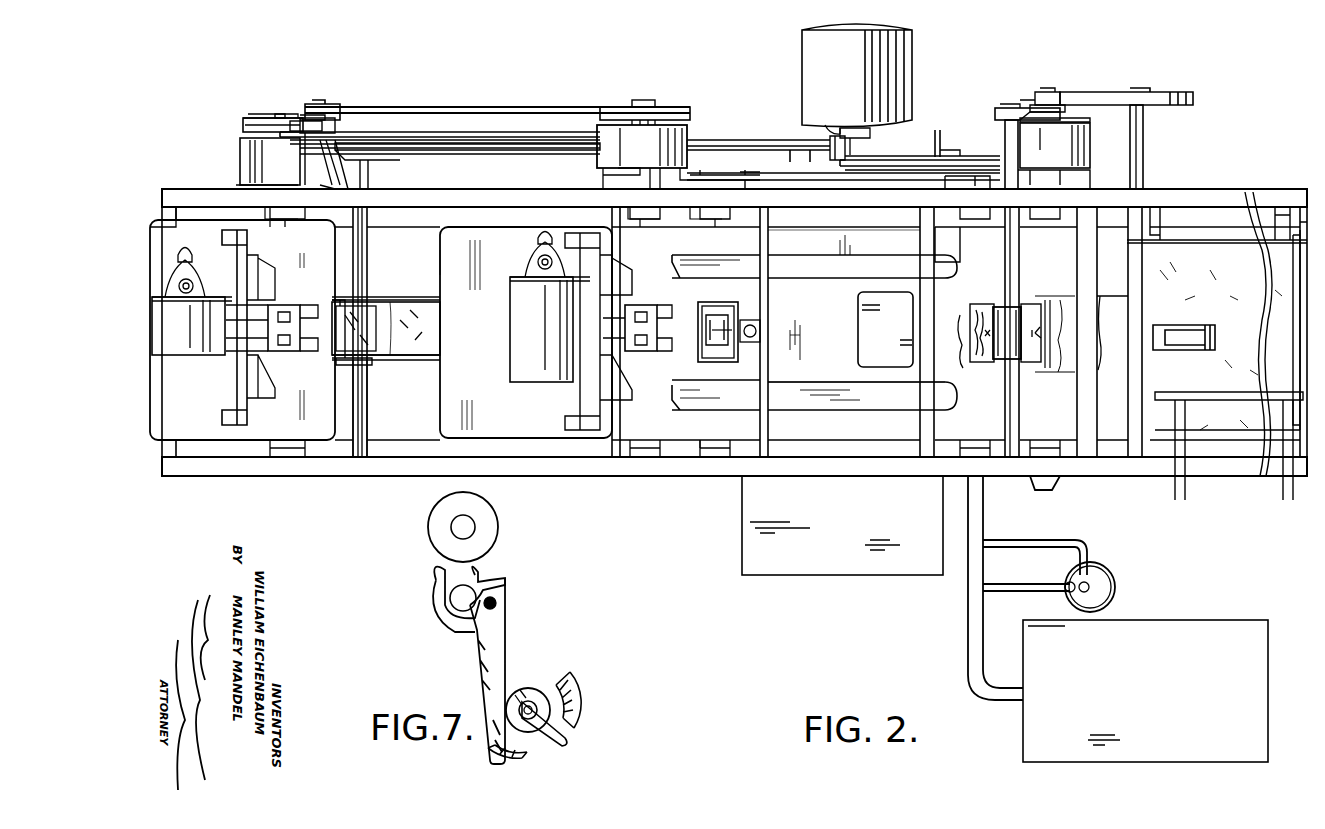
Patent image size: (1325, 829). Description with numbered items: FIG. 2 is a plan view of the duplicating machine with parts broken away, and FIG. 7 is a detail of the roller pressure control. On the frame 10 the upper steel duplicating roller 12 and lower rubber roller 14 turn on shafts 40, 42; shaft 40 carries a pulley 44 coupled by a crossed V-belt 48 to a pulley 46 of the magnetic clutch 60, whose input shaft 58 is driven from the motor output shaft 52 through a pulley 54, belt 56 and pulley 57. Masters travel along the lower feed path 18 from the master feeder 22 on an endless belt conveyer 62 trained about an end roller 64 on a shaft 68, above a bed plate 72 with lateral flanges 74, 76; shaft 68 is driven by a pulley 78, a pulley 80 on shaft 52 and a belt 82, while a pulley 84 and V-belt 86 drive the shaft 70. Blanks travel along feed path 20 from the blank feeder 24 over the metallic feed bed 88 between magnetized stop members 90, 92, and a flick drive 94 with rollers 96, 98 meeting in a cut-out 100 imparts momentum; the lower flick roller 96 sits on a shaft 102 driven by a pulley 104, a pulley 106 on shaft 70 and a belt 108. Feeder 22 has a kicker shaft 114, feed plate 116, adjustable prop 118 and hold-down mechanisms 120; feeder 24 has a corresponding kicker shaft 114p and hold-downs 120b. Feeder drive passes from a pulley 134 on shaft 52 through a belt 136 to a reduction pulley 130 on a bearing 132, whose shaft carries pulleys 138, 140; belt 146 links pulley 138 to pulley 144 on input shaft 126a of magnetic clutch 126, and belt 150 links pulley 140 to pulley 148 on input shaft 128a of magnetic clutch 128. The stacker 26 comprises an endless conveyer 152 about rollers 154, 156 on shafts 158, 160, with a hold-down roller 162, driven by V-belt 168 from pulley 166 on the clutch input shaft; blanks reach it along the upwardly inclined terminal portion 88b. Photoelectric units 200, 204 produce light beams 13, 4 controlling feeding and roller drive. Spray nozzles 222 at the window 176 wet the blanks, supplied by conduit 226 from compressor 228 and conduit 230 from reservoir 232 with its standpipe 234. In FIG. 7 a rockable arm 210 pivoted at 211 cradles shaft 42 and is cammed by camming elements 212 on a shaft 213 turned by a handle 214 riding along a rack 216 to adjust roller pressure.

In FIG. 2, the frame 10 is at (305, 462).
In FIG. 2, the feed plate 116 is at (168, 443).
In FIG. 2, the shaft 68 is at (368, 242).
In FIG. 2, the belt 108 is at (780, 200).
In FIG. 2, the duplicating roller shaft 40 is at (1019, 246).
In FIG. 7, the duplicating roller shaft 40 is at (470, 525).
In FIG. 2, the photoelectric unit 204 is at (1104, 305).
In FIG. 2, the master card feeder 22 is at (215, 418).
In FIG. 2, the adjustable prop 118 is at (169, 347).
In FIG. 2, the resilient hold-down mechanisms 120 is at (290, 305).
In FIG. 2, the endless belt conveyer 62 is at (432, 330).
In FIG. 2, the lateral flange 76 is at (430, 297).
In FIG. 2, the bed plate 72 is at (435, 360).
In FIG. 2, the lateral flange 74 is at (370, 362).
In FIG. 2, the end roller 64 is at (347, 360).
In FIG. 2, the feed path 18 is at (405, 294).
In FIG. 2, the kicker shaft 114 is at (284, 222).
In FIG. 2, the blank card feeder 24 is at (574, 411).
In FIG. 2, the resilient hold-down mechanisms 120b is at (652, 305).
In FIG. 2, the flick drive 94 is at (745, 296).
In FIG. 2, the transverse cut-out 100 is at (712, 305).
In FIG. 2, the lower flick roller 96 is at (735, 355).
In FIG. 2, the upper flick roller 98 is at (710, 330).
In FIG. 2, the transverse shaft 102 is at (722, 222).
In FIG. 2, the kicker shaft 114p is at (648, 222).
In FIG. 2, the stop member 90 is at (884, 260).
In FIG. 2, the stop member 92 is at (858, 400).
In FIG. 2, the photoelectric unit 200 is at (860, 357).
In FIG. 2, the feed bed 88 is at (828, 339).
In FIG. 2, the feed path 20 is at (810, 293).
In FIG. 2, the magnetic clutch 126 is at (246, 156).
In FIG. 2, the pulley 144 is at (252, 118).
In FIG. 2, the input shaft 126a is at (278, 113).
In FIG. 2, the belt 146 is at (305, 120).
In FIG. 2, the pulley 140 is at (335, 106).
In FIG. 2, the pulley 138 is at (340, 125).
In FIG. 2, the intermediate pulley 130 is at (360, 137).
In FIG. 2, the endless belt 136 is at (494, 142).
In FIG. 2, the belt 82 is at (487, 154).
In FIG. 2, the pulley 78 is at (378, 164).
In FIG. 2, the bearing 132 is at (322, 180).
In FIG. 2, the belt 150 is at (539, 112).
In FIG. 2, the pulley 148 is at (617, 107).
In FIG. 2, the input shaft 128a is at (645, 100).
In FIG. 2, the magnetic clutch 128 is at (605, 158).
In FIG. 2, the pulley 104 is at (735, 182).
In FIG. 2, the motor output shaft 52 is at (912, 44).
In FIG. 2, the pulley 134 is at (840, 128).
In FIG. 2, the pulley 80 is at (850, 148).
In FIG. 2, the pulley 84 is at (842, 163).
In FIG. 2, the V-belt 86 is at (905, 156).
In FIG. 2, the pulley 54 is at (846, 182).
In FIG. 2, the pulley 106 is at (955, 184).
In FIG. 2, the belt 56 is at (1018, 185).
In FIG. 2, the pulley 57 is at (1055, 186).
In FIG. 2, the pulley 44 is at (1003, 108).
In FIG. 2, the crossed-over endless V-belt 48 is at (1024, 110).
In FIG. 2, the input shaft 58 is at (1045, 90).
In FIG. 2, the pulley 166 is at (1060, 98).
In FIG. 2, the V-belt 168 is at (1078, 95).
In FIG. 2, the pulley 46 is at (1060, 119).
In FIG. 2, the magnetic clutch 60 is at (1090, 140).
In FIG. 2, the shaft 158 is at (1143, 140).
In FIG. 2, the supporting roller 154 is at (1160, 215).
In FIG. 2, the endless conveyer 152 is at (1178, 248).
In FIG. 2, the supporting roller 156 is at (1280, 245).
In FIG. 2, the shaft 160 is at (1295, 220).
In FIG. 2, the stacker system 26 is at (1222, 260).
In FIG. 2, the hold-down roller 162 is at (1215, 350).
In FIG. 2, the shaft 70 is at (964, 222).
In FIG. 2, the duplicating roller 12 is at (1000, 360).
In FIG. 7, the duplicating roller 12 is at (430, 530).
In FIG. 2, the duplicating roller 14 is at (1036, 364).
In FIG. 7, the duplicating roller 14 is at (432, 612).
In FIG. 2, the nozzles 222 is at (976, 356).
In FIG. 2, the window 176 is at (1037, 300).
In FIG. 2, the light beam L3 13 is at (988, 325).
In FIG. 2, the light beam L4 4 is at (1040, 330).
In FIG. 2, the terminal portion of feed bed 88b is at (1105, 476).
In FIG. 2, the conduit 226 is at (968, 636).
In FIG. 2, the standpipe 234 is at (1030, 538).
In FIG. 2, the conduit 230 is at (1015, 584).
In FIG. 2, the liquid container 232 is at (1110, 578).
In FIG. 2, the compressor 228 is at (1030, 737).
In FIG. 7, the shaft 42 is at (468, 588).
In FIG. 7, the pivot 211 is at (497, 601).
In FIG. 7, the rockable arm 210 is at (505, 645).
In FIG. 7, the camming elements 212 is at (528, 690).
In FIG. 7, the shaft 213 is at (527, 720).
In FIG. 7, the handle 214 is at (568, 742).
In FIG. 7, the rack 216 is at (575, 695).